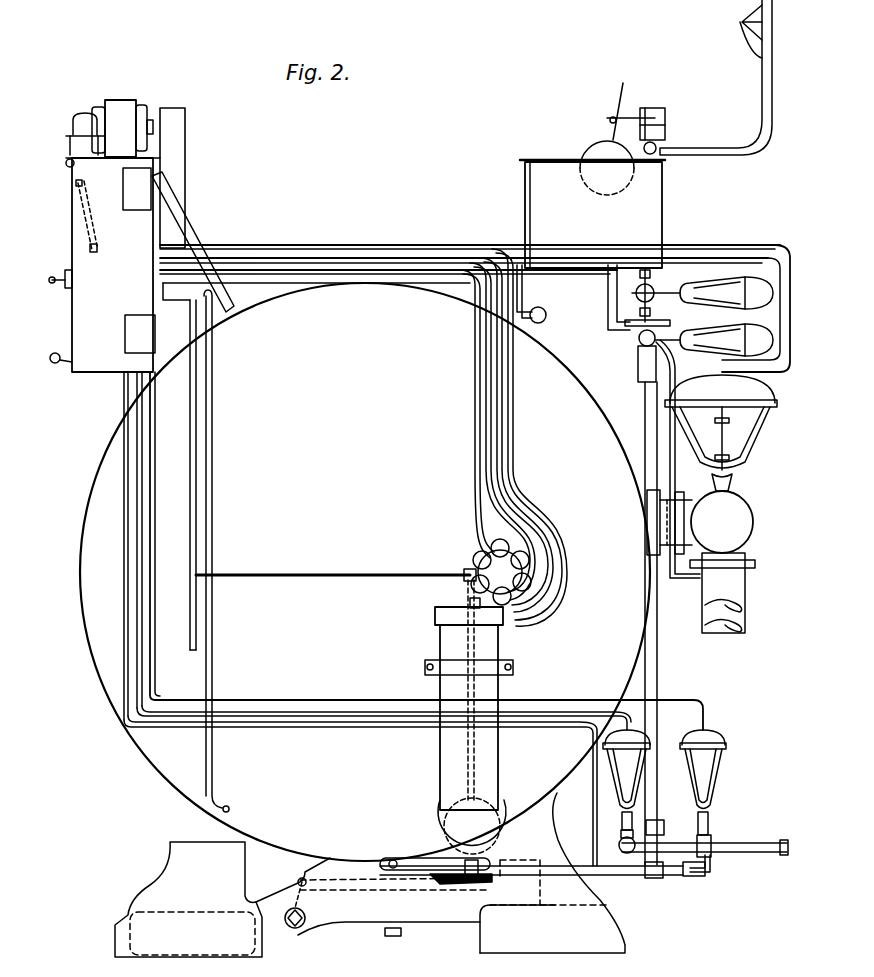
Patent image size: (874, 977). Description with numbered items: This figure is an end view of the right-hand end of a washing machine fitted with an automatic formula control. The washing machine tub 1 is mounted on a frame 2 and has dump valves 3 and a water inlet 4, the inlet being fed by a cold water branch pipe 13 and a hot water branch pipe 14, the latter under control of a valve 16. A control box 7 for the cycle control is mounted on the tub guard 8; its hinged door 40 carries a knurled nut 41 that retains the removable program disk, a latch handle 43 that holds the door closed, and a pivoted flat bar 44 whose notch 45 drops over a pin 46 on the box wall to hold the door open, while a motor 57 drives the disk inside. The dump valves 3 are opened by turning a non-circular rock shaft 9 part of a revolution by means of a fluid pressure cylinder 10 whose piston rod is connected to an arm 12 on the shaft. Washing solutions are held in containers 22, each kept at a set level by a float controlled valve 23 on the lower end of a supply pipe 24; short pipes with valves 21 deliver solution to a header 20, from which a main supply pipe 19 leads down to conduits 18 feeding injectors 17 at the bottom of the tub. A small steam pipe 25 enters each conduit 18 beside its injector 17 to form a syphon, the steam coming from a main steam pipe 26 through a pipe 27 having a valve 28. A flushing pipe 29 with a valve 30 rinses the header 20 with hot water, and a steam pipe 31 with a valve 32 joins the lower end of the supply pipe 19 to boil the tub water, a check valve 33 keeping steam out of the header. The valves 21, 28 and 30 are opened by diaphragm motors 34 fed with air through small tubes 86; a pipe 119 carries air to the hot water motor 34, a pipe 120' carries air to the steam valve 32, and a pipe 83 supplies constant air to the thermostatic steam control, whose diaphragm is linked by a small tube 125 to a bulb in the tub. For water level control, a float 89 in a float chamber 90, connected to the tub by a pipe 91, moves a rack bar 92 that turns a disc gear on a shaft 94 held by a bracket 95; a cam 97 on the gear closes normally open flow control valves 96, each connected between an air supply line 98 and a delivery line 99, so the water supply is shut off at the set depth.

The washing machine tub 1 is at (80, 533).
The frame 2 is at (168, 857).
The dump valves 3 is at (400, 925).
The water inlet 4 is at (662, 525).
The control box 7 is at (113, 265).
The tub guard 8 is at (214, 314).
The rock shaft 9 is at (294, 930).
The fluid pressure cylinder 10 is at (540, 900).
The arm 12 is at (315, 895).
The branch pipe 13 is at (742, 618).
The branch pipe 14 is at (742, 584).
The valve 16 is at (740, 520).
The injectors 17 is at (393, 857).
The conduits 18 is at (646, 870).
The main supply pipe 19 is at (658, 656).
The manifold or header 20 is at (640, 364).
The valves 21 is at (635, 294).
The washing solution containers 22 is at (527, 184).
The float controlled valve 23 is at (650, 108).
The supply pipe 24 is at (742, 22).
The steam pipe 25 is at (698, 876).
The main steam pipe 26 is at (782, 850).
The pipe 27 is at (712, 860).
The valve 28 is at (710, 840).
The flushing pipe 29 is at (650, 400).
The valve 30 is at (635, 344).
The steam pipe 31 is at (680, 845).
The valve 32 is at (620, 845).
The check valve 33 is at (660, 824).
The diaphragm motor 34 is at (714, 295).
The hinged door 40 is at (72, 306).
The knurled nut 41 is at (64, 275).
The latch handle 43 is at (50, 360).
The flat bar 44 is at (88, 205).
The notch 45 is at (98, 244).
The pin 46 is at (80, 222).
The motor 57 is at (117, 100).
The pipe 83 is at (190, 398).
The tube 86 is at (150, 505).
The float 89 is at (452, 805).
The float chamber 90 is at (444, 746).
The pipe 91 is at (432, 876).
The rack bar 92 is at (468, 587).
The shaft 94 is at (535, 540).
The bracket 95 is at (512, 620).
The air pressure flow control valves 96 is at (478, 540).
The cam 97 is at (478, 565).
The air pressure supply line 98 is at (290, 575).
The delivery line 99 is at (508, 392).
The pipe 119 is at (345, 228).
The pipe 120' is at (356, 551).
The small tube 125 is at (213, 467).